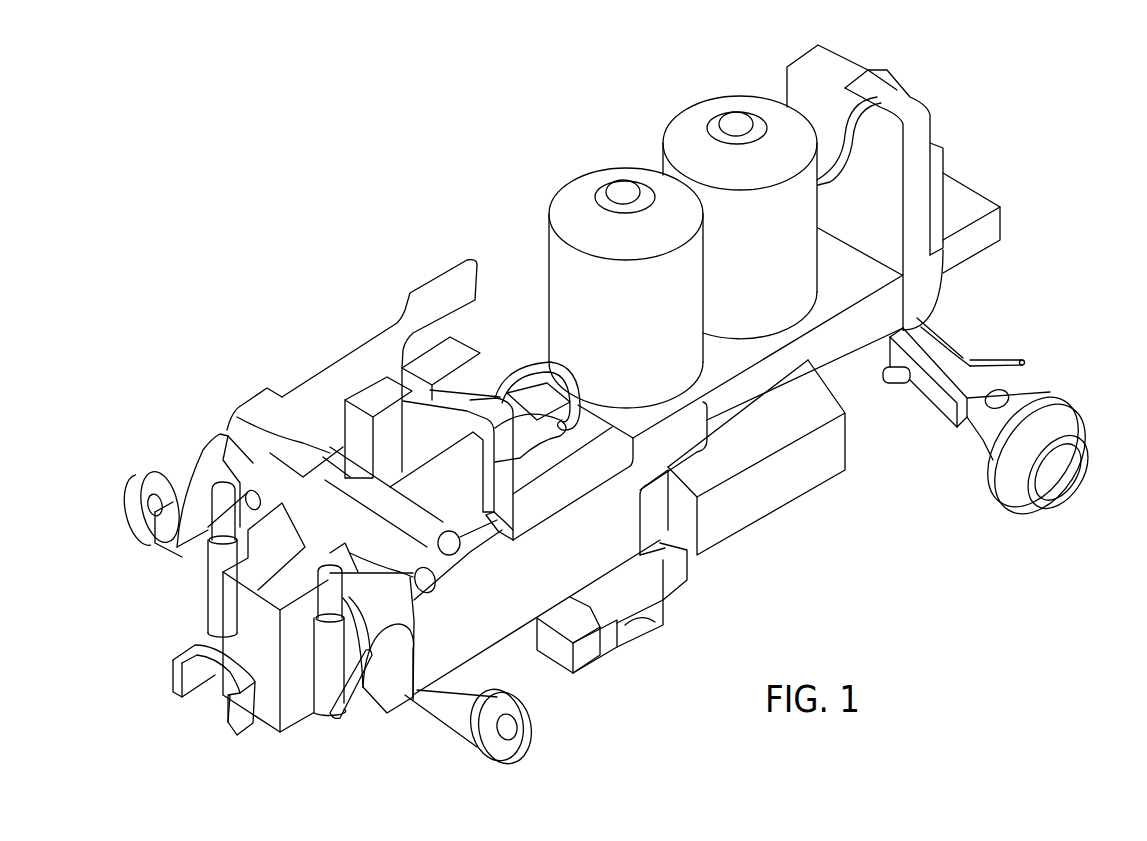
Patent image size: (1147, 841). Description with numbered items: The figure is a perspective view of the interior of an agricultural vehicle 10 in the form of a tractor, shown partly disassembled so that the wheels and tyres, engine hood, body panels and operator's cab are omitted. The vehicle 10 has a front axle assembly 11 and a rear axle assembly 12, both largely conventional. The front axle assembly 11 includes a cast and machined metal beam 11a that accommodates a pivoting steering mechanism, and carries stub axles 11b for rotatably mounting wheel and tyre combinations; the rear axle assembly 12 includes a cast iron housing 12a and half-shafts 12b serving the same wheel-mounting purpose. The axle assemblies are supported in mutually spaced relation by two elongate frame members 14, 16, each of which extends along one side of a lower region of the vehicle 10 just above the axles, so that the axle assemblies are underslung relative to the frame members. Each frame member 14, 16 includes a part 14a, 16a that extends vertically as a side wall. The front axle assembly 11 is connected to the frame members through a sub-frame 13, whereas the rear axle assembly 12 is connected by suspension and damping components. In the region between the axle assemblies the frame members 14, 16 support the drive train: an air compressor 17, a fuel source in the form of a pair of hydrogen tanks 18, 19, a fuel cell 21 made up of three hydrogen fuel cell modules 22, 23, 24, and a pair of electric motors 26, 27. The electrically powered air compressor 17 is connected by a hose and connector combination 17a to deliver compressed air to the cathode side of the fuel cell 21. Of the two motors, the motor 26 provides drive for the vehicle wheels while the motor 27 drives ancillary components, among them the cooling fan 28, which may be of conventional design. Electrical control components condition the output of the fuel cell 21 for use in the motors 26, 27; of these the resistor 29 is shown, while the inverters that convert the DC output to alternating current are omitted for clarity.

The agricultural vehicle 10 is at (1100, 285).
The front axle assembly 11 is at (938, 403).
The beam 11a is at (900, 373).
The stub axles 11b is at (1037, 433).
The rear axle assembly 12 is at (393, 667).
The housing 12a is at (373, 673).
The half-shafts 12b is at (153, 507).
The sub-frame 13 is at (970, 207).
The frame member 14 is at (617, 588).
The part 14a is at (645, 587).
The frame member 16 is at (370, 367).
The part 16a is at (297, 417).
The air compressor 17 is at (540, 397).
The hose and connector combination 17a is at (535, 460).
The hydrogen tank 18 is at (605, 200).
The hydrogen tank 19 is at (718, 130).
The fuel cell 21 is at (670, 512).
The hydrogen fuel cell module 22 is at (670, 482).
The hydrogen fuel cell module 23 is at (687, 578).
The hydrogen fuel cell module 24 is at (560, 653).
The electric motor 26 is at (390, 447).
The electric motor 27 is at (435, 357).
The cooling fan 28 is at (920, 150).
The resistor 29 is at (237, 417).